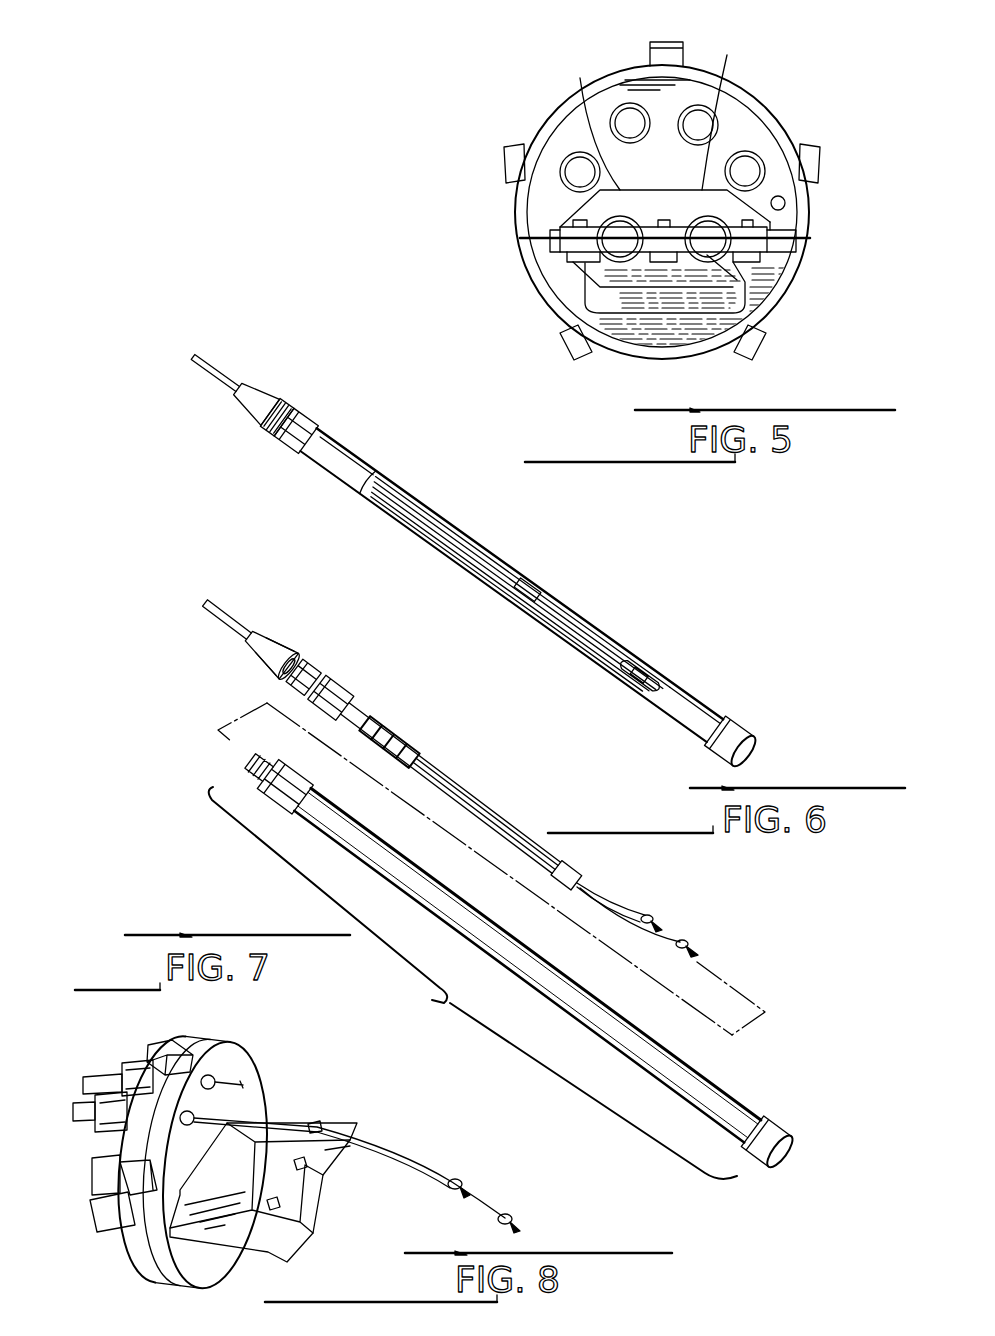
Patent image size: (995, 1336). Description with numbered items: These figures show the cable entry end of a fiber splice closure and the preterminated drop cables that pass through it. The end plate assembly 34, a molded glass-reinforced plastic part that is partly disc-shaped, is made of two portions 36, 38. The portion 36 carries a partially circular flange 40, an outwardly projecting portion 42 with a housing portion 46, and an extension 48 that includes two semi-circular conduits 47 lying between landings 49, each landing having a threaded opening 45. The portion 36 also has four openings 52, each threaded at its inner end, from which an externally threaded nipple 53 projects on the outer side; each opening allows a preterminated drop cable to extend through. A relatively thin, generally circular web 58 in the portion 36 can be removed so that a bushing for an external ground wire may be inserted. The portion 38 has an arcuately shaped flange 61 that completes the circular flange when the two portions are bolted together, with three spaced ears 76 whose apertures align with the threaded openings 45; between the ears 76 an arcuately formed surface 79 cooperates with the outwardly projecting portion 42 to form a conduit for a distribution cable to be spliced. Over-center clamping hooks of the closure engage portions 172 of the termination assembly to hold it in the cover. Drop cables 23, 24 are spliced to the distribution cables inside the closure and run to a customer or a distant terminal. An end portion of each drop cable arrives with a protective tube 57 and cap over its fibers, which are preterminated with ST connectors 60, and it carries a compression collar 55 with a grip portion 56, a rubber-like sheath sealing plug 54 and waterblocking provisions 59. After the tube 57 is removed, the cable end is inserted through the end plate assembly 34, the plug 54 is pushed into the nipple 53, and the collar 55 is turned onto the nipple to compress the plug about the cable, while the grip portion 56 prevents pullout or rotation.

In FIG. 6, the drop cable 23 is at (213, 362).
In FIG. 7, the drop cable 23 is at (222, 607).
In FIG. 8, the drop cable 23 is at (98, 1074).
In FIG. 8, the drop cable 24 is at (82, 1115).
In FIG. 8, the end plate assembly 34 is at (245, 1066).
In FIG. 5, the portion 36 is at (800, 134).
In FIG. 5, the portion 38 is at (796, 295).
In FIG. 5, the partially circular flange 40 is at (700, 66).
In FIG. 5, the outwardly projecting portion 42 is at (762, 205).
In FIG. 5, the threaded opening 45 is at (565, 222).
In FIG. 5, the housing portion 46 is at (626, 204).
In FIG. 5, the semi-circular conduit 47 is at (700, 208).
In FIG. 5, the extension 48 is at (690, 190).
In FIG. 5, the landing 49 is at (556, 230).
In FIG. 5, the opening 52 is at (702, 120).
In FIG. 5, the externally threaded nipple 53 is at (752, 158).
In FIG. 6, the sheath sealing plug 54 is at (293, 397).
In FIG. 7, the sheath sealing plug 54 is at (343, 703).
In FIG. 6, the compression collar 55 is at (253, 387).
In FIG. 7, the compression collar 55 is at (268, 633).
In FIG. 7, the grip portion 56 is at (310, 668).
In FIG. 7, the protective tube 57 is at (648, 1062).
In FIG. 5, the web 58 is at (785, 203).
In FIG. 7, the waterblocking provisions 59 is at (368, 719).
In FIG. 7, the ST connector 60 is at (655, 916).
In FIG. 8, the ST connector 60 is at (465, 1180).
In FIG. 5, the arcuately shaped flange 61 is at (672, 352).
In FIG. 5, the ear 76 is at (575, 243).
In FIG. 5, the arcuately formed surface 79 is at (592, 267).
In FIG. 8, the portion 172 is at (180, 1046).